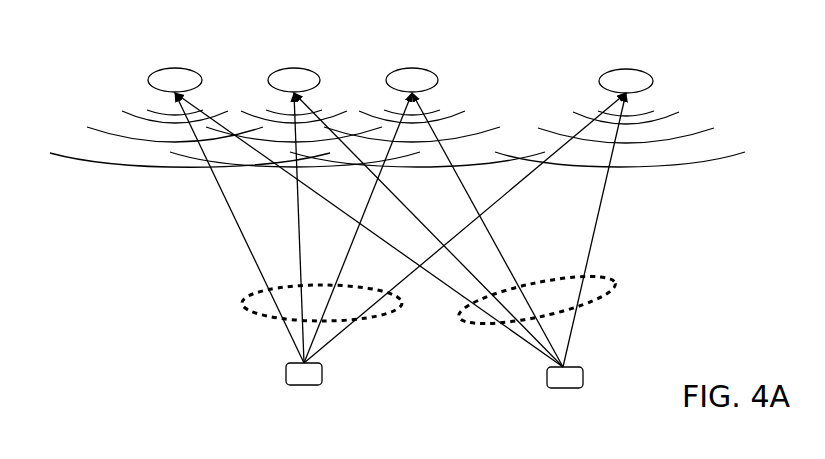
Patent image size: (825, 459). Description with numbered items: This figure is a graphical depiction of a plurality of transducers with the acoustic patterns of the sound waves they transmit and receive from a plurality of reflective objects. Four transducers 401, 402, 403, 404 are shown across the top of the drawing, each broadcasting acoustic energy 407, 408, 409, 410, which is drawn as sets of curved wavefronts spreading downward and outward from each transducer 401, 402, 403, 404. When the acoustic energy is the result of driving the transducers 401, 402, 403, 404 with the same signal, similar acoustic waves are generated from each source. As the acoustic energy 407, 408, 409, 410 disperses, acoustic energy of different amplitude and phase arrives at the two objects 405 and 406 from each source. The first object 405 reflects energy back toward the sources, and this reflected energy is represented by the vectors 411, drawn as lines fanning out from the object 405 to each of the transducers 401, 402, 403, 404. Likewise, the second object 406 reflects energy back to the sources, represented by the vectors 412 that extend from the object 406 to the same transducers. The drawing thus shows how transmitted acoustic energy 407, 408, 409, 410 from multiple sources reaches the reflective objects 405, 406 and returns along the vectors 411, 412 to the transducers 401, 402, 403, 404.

The transducer 401 is at (188, 68).
The transducer 402 is at (293, 68).
The transducer 403 is at (412, 68).
The transducer 404 is at (625, 70).
The object 405 is at (315, 385).
The object 406 is at (548, 387).
The acoustic energy 407 is at (122, 168).
The acoustic energy 408 is at (278, 166).
The acoustic energy 409 is at (455, 135).
The acoustic energy 410 is at (667, 158).
The vectors 411 is at (255, 295).
The vectors 412 is at (612, 287).